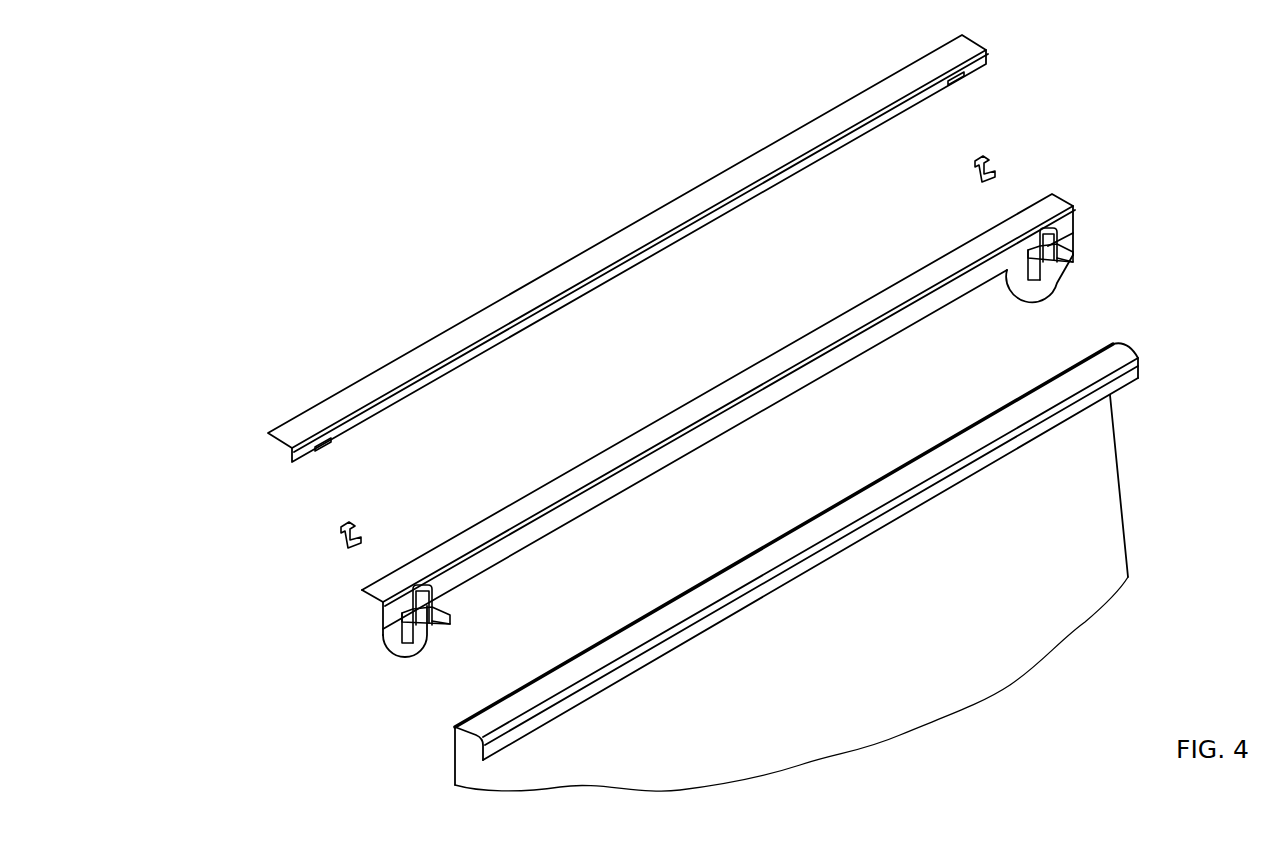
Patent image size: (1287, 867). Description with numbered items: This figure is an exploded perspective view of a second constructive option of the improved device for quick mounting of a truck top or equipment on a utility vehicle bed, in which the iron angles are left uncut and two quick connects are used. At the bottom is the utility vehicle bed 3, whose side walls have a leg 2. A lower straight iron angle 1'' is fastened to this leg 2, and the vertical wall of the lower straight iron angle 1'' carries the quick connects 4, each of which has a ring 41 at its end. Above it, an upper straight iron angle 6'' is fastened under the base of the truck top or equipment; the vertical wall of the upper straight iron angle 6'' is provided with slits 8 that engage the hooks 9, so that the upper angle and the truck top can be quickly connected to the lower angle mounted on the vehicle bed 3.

The upper straight iron angle 6'' is at (628, 248).
The slits 8 is at (972, 73).
The hooks 9 is at (992, 167).
The lower straight iron angle 1'' is at (761, 378).
The quick connects 4 is at (1068, 250).
The rings 41 is at (1058, 230).
The leg 2 is at (1112, 352).
The utility vehicle bed 3 is at (1068, 508).